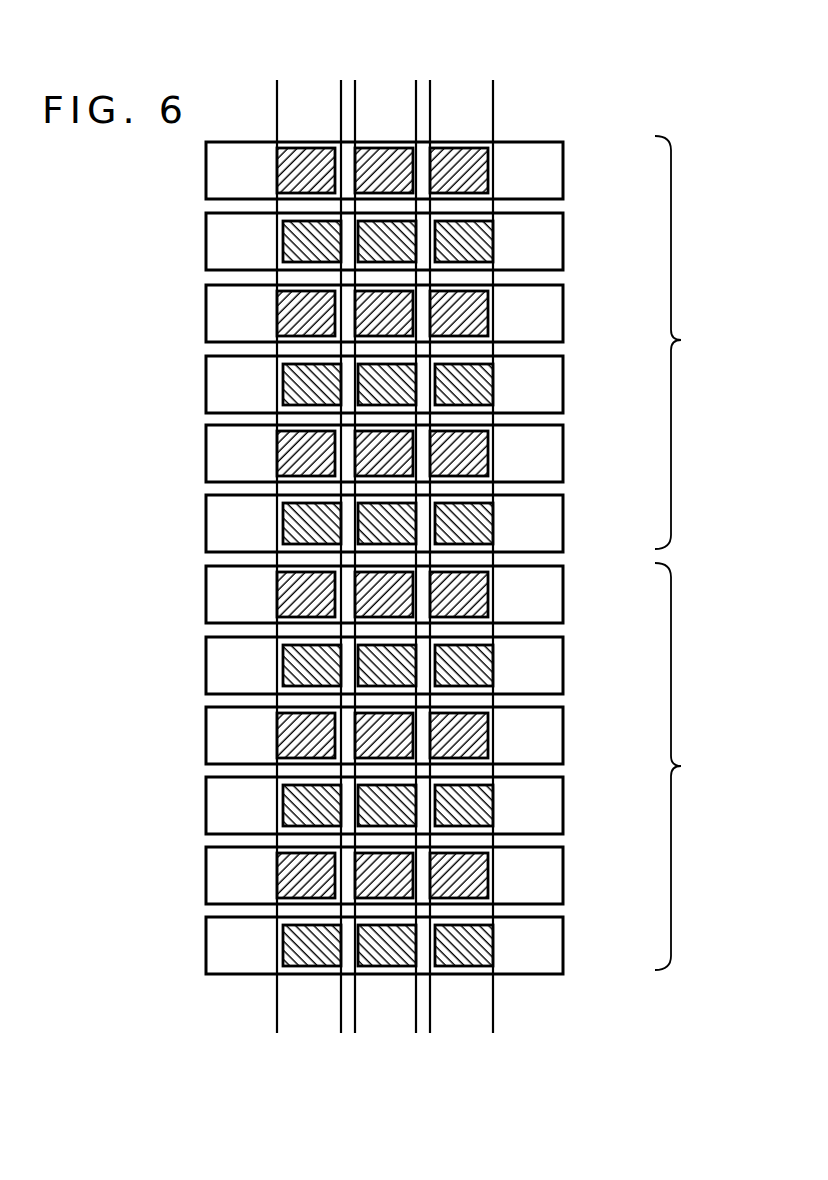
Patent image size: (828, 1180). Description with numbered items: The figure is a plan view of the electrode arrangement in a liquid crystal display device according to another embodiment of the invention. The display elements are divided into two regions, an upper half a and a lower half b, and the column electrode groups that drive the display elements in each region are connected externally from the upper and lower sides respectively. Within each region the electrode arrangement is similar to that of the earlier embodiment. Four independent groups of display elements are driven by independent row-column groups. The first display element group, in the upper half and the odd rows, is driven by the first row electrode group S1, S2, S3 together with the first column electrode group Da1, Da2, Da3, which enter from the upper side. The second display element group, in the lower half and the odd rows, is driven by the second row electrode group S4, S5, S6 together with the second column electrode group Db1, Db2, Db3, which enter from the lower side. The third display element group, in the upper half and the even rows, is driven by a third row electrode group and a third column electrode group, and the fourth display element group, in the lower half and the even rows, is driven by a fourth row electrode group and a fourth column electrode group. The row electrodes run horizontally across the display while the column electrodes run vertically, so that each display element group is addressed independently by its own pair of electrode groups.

The first row electrode S1 is at (563, 170).
The first row electrode S2 is at (563, 313).
The first row electrode S3 is at (563, 453).
The second row electrode S4 is at (563, 594).
The second row electrode S5 is at (563, 735).
The second row electrode S6 is at (563, 875).
The first column electrode Da1 is at (277, 72).
The first column electrode Da2 is at (372, 70).
The first column electrode Da3 is at (448, 70).
The second column electrode Db1 is at (276, 1041).
The second column electrode Db2 is at (356, 1041).
The second column electrode Db3 is at (432, 1041).
The upper half region a is at (677, 342).
The lower half region b is at (677, 766).